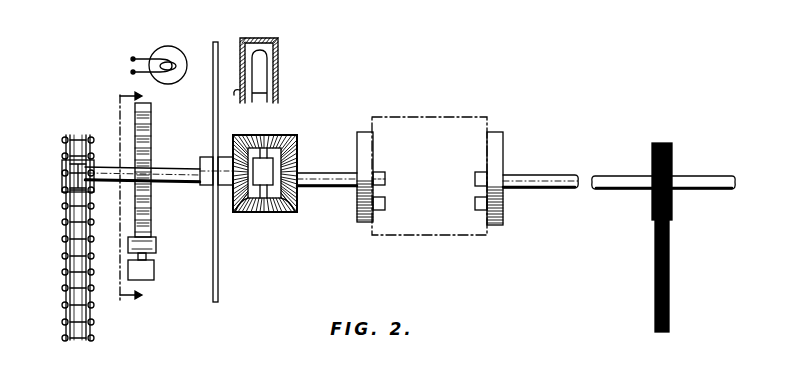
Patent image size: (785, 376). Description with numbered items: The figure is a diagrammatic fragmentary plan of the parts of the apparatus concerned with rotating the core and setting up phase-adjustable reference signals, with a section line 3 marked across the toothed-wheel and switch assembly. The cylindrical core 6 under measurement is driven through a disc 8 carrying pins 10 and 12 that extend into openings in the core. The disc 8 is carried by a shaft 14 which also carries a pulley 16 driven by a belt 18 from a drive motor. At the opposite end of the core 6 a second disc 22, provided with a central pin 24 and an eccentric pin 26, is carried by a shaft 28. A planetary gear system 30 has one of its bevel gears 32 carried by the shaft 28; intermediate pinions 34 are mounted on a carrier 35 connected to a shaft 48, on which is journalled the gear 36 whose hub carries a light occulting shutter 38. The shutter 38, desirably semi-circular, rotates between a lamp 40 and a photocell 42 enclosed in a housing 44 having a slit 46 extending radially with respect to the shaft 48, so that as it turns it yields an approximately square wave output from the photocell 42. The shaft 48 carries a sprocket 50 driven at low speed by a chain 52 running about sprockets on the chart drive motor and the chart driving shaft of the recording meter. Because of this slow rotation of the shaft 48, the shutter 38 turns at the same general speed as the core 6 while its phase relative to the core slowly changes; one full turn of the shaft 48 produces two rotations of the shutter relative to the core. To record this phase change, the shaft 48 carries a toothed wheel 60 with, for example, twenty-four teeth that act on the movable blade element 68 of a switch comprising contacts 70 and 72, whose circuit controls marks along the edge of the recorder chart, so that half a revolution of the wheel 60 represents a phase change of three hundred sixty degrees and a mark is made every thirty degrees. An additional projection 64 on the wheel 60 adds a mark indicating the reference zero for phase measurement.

The section line 3- 3 is at (122, 197).
The cylindrical core 6 is at (418, 237).
The disc 8 is at (500, 195).
The pin 10 is at (477, 174).
The pin 12 is at (477, 204).
The shaft 14 is at (530, 175).
The pulley 16 is at (652, 168).
The belt 18 is at (655, 294).
The second disc 22 is at (365, 132).
The central pin 24 is at (385, 177).
The eccentric pin 26 is at (385, 203).
The shaft 28 is at (313, 179).
The planetary gear system 30 is at (291, 131).
The bevel gear 32 is at (297, 158).
The intermediate pinions 34 is at (268, 111).
The carrier 35 is at (295, 198).
The gear 36 is at (235, 200).
The light occulting shutter 38 is at (213, 112).
The lamp 40 is at (160, 48).
The photocell 42 is at (260, 73).
The housing 44 is at (278, 45).
The slit 46 is at (234, 92).
The shaft 48 is at (179, 168).
The sprocket 50 is at (66, 182).
The chain 52 is at (66, 272).
The toothed wheel 60 is at (151, 212).
The projection 64 is at (150, 184).
The movable blade element 68 is at (128, 241).
The contact 70 is at (146, 254).
The contact 72 is at (146, 262).